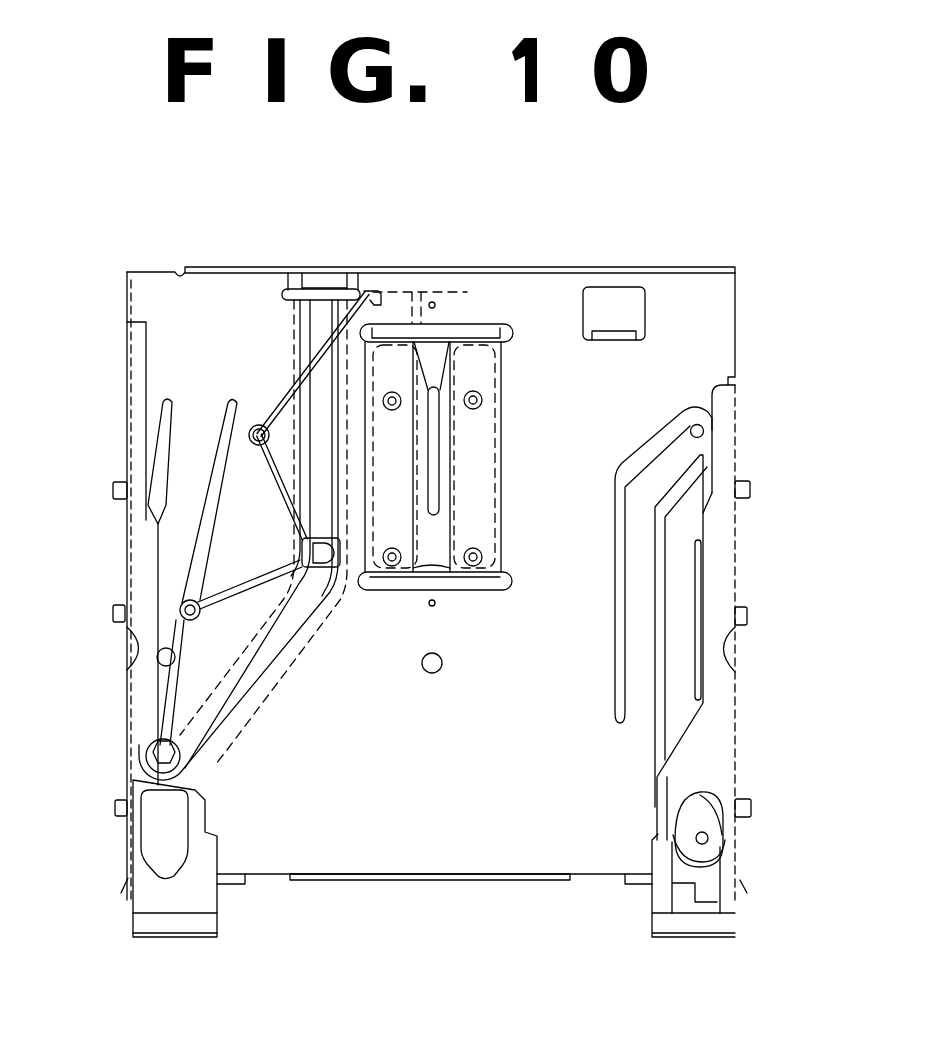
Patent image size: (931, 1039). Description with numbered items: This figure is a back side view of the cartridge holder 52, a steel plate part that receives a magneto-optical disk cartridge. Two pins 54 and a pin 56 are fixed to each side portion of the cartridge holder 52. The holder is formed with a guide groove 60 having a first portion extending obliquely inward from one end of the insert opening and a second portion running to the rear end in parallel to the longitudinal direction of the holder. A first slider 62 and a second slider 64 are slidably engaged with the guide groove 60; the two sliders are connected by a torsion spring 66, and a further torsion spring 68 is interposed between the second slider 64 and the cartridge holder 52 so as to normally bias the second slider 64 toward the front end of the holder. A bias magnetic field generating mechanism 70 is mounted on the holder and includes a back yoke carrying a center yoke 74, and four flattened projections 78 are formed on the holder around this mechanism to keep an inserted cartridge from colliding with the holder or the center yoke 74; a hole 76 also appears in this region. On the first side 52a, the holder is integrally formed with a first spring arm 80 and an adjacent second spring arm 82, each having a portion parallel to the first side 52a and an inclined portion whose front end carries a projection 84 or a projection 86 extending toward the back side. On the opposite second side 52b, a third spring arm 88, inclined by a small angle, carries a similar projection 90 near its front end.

The cartridge holder 52 is at (195, 283).
The first side 52a is at (738, 318).
The second side 52b is at (128, 328).
The pins 54 is at (113, 489).
The pin 56 is at (113, 613).
The guide groove 60 is at (285, 640).
The first slider 62 is at (155, 755).
The second slider 64 is at (304, 552).
The torsion spring 66 is at (180, 690).
The torsion spring 68 is at (285, 392).
The bias magnetic field generating mechanism 70 is at (465, 322).
The center yoke 74 is at (437, 512).
The hole 76 is at (444, 578).
The flattened projections 78 is at (392, 400).
The first spring arm 80 is at (680, 610).
The second spring arm 82 is at (622, 658).
The projection 84 is at (708, 838).
The projection 86 is at (695, 426).
The third spring arm 88 is at (167, 443).
The projection 90 is at (160, 658).